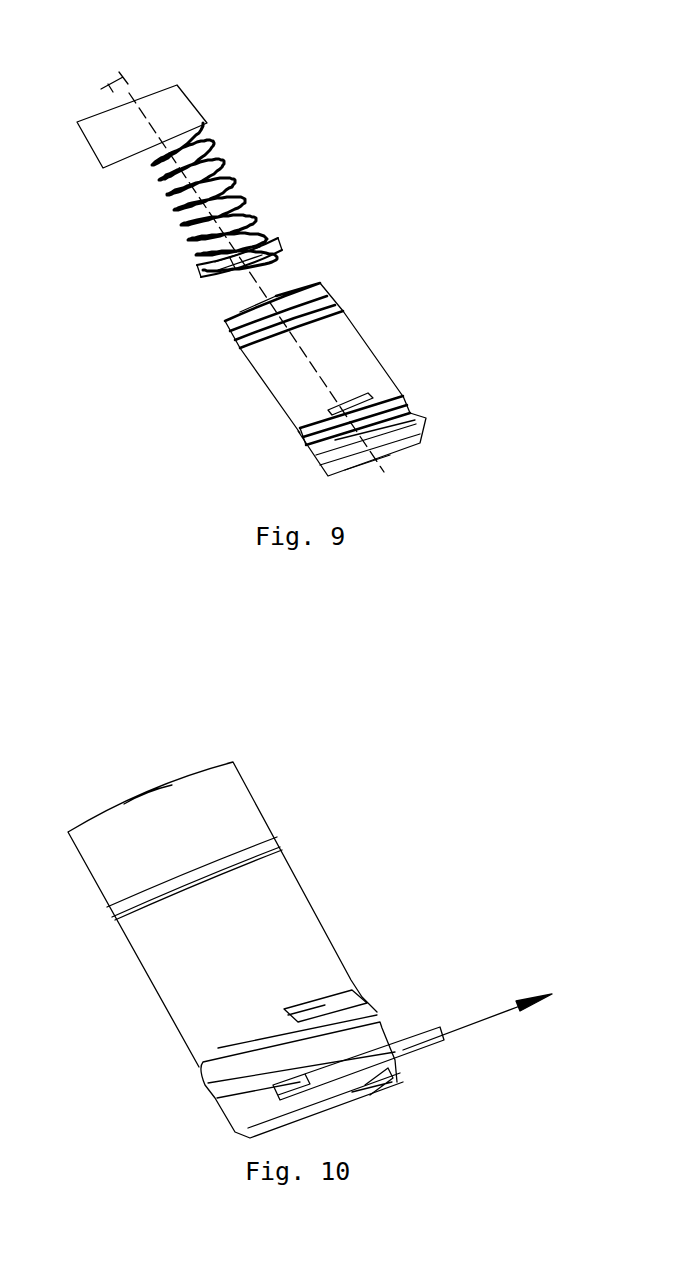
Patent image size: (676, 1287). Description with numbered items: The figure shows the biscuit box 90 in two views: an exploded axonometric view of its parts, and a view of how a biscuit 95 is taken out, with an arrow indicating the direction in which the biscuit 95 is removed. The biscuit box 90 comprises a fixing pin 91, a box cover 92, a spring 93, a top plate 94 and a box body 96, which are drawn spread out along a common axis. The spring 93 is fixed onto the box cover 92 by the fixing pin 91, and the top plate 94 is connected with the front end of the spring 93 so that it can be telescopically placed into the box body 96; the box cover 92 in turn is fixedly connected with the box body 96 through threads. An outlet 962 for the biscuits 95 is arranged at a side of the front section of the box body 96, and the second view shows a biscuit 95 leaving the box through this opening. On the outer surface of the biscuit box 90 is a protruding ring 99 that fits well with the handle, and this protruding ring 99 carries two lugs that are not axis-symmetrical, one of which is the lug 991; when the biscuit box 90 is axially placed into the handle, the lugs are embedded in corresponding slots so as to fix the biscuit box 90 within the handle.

In FIG. 10, the biscuit box 90 is at (252, 897).
In FIG. 9, the fixing pin 91 is at (124, 84).
In FIG. 9, the box cover 92 is at (180, 110).
In FIG. 9, the spring 93 is at (206, 170).
In FIG. 9, the top plate 94 is at (264, 258).
In FIG. 10, the biscuit 95 is at (404, 1051).
In FIG. 9, the box body 96 is at (350, 353).
In FIG. 9, the protruding ring 99 is at (411, 403).
In FIG. 9, the outlet 962 is at (331, 445).
In FIG. 9, the lug 991 is at (354, 420).